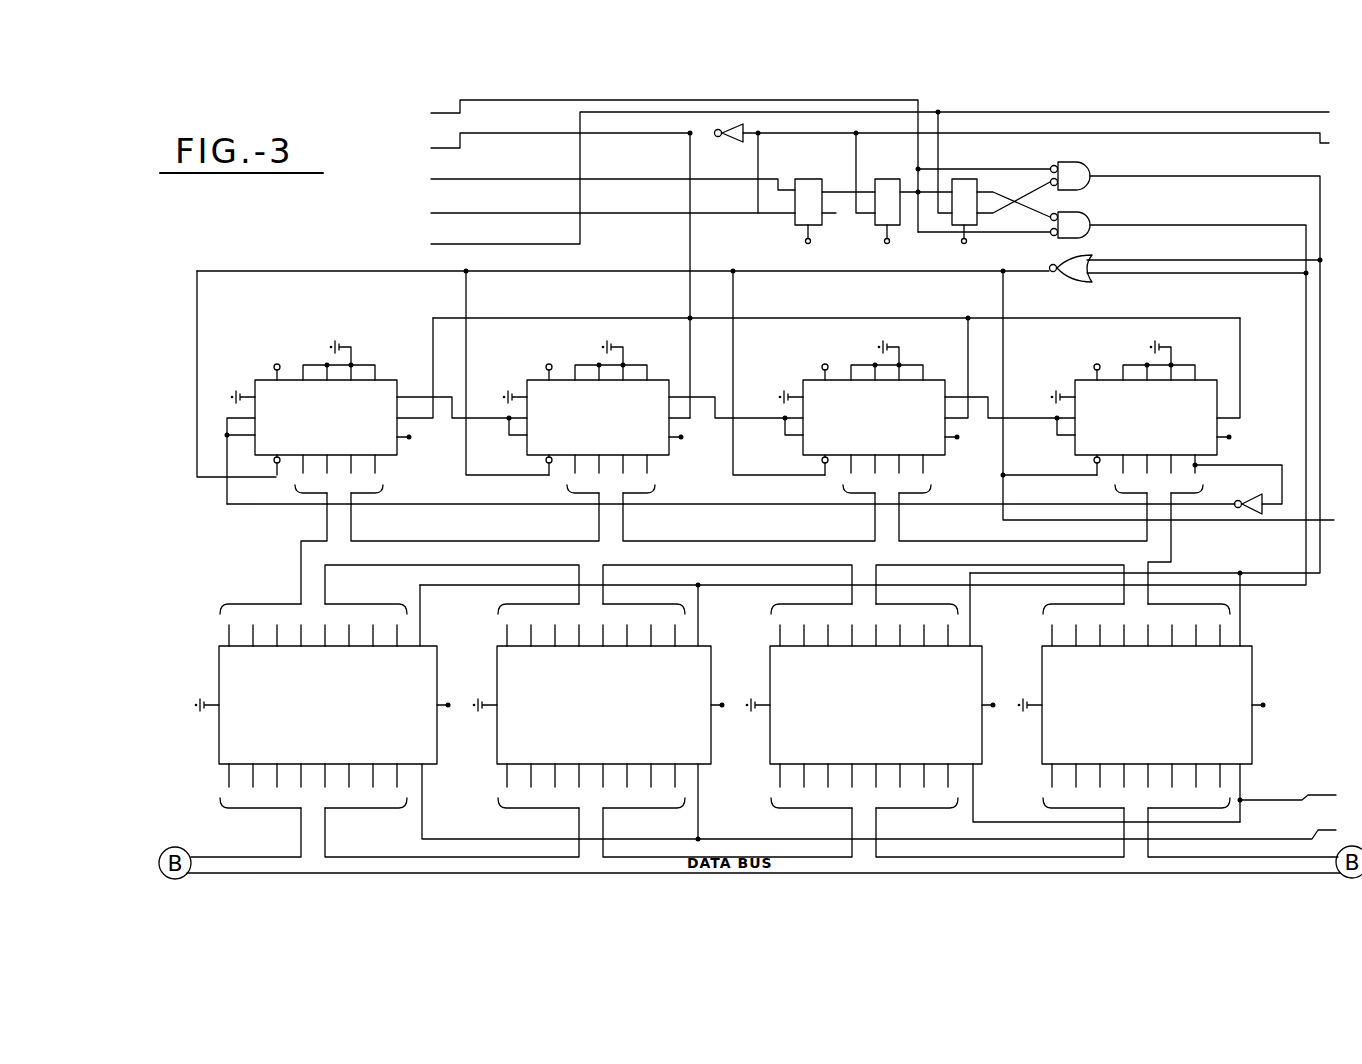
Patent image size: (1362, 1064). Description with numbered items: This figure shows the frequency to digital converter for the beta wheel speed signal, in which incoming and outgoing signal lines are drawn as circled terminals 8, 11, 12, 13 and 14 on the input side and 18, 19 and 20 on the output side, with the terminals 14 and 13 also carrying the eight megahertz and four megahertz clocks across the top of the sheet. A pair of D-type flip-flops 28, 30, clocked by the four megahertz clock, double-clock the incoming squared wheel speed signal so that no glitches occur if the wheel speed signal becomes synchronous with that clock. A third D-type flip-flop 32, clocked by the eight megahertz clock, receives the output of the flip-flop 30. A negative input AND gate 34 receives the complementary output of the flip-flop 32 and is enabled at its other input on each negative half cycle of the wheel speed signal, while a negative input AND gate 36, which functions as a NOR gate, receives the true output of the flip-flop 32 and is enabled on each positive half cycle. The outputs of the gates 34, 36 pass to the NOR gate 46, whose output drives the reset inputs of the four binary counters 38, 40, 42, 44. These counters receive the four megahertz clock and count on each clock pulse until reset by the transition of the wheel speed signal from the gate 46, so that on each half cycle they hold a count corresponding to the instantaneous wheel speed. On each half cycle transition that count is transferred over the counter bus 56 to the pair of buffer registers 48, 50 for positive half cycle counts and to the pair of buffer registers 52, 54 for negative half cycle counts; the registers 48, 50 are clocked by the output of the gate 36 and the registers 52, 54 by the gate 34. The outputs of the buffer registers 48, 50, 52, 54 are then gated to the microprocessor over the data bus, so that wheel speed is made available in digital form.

The input line 8 is at (660, 164).
The input line 11 is at (864, 271).
The input line 12 is at (597, 179).
The 4 MHz clock line 13 is at (880, 172).
The 8 MHz clock line 14 is at (880, 177).
The output line 18 is at (1182, 403).
The output line 19 is at (1301, 795).
The output line 20 is at (1030, 830).
The D-type flip-flop 28 is at (812, 164).
The D-type flip-flop 30 is at (895, 179).
The D-type flip-flop 32 is at (964, 179).
The negative input AND gate 34 is at (1086, 164).
The negative input AND gate 36 is at (1089, 213).
The binary counter 38 is at (385, 380).
The binary counter 40 is at (527, 380).
The binary counter 42 is at (803, 380).
The binary counter 44 is at (1075, 380).
The NOR gate 46 is at (1080, 284).
The buffer register 48 is at (436, 646).
The buffer register 50 is at (711, 646).
The buffer register 52 is at (982, 646).
The buffer register 54 is at (1252, 646).
The counter bus 56 is at (808, 540).